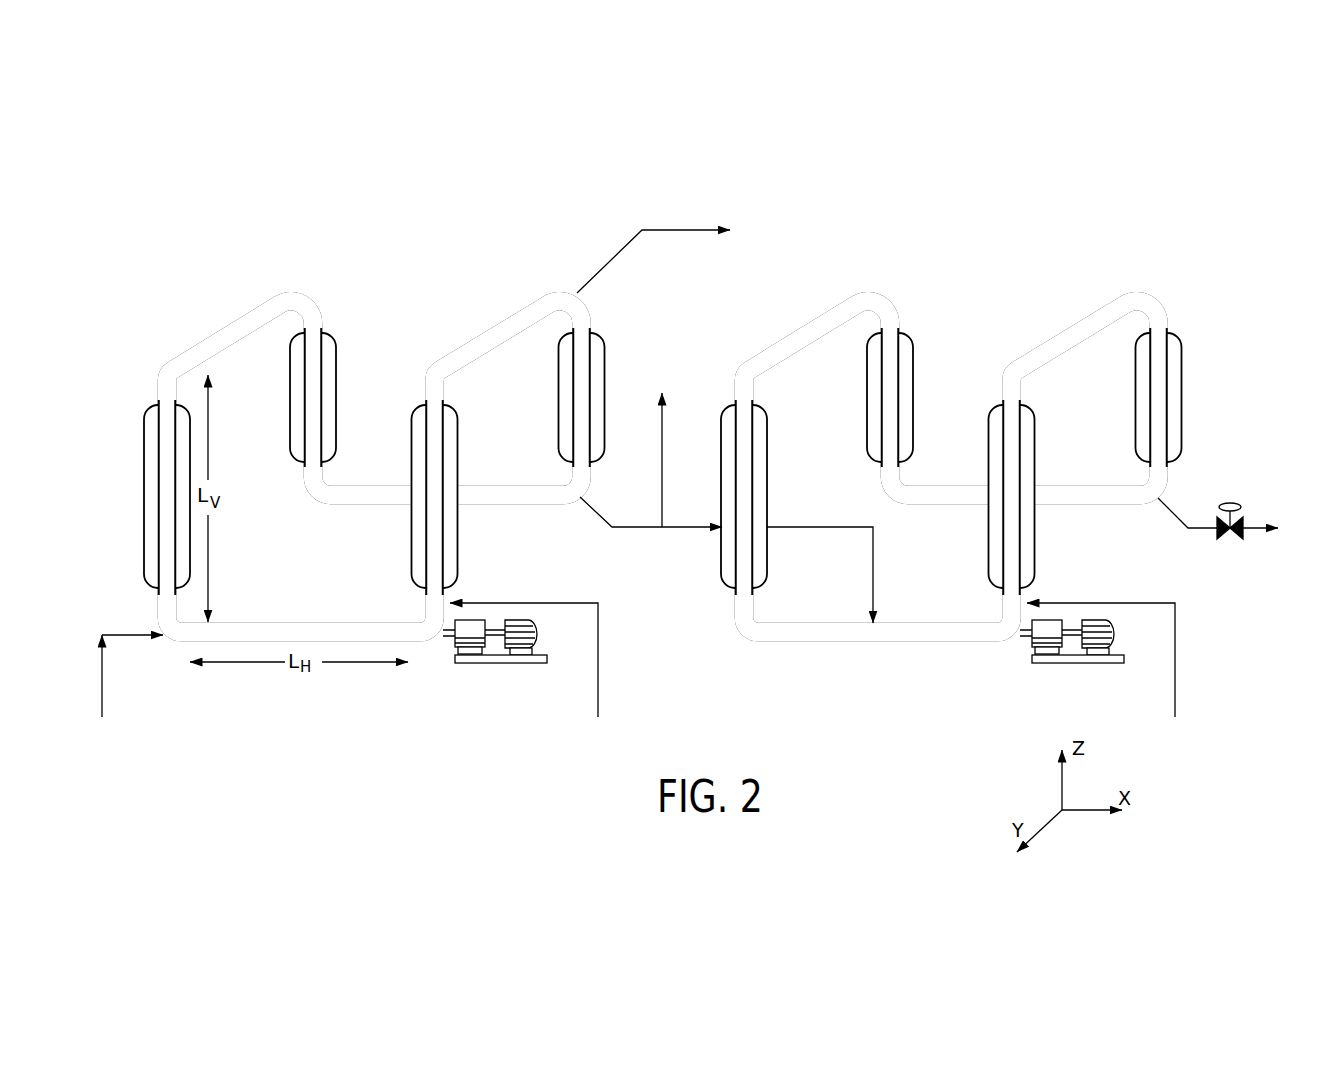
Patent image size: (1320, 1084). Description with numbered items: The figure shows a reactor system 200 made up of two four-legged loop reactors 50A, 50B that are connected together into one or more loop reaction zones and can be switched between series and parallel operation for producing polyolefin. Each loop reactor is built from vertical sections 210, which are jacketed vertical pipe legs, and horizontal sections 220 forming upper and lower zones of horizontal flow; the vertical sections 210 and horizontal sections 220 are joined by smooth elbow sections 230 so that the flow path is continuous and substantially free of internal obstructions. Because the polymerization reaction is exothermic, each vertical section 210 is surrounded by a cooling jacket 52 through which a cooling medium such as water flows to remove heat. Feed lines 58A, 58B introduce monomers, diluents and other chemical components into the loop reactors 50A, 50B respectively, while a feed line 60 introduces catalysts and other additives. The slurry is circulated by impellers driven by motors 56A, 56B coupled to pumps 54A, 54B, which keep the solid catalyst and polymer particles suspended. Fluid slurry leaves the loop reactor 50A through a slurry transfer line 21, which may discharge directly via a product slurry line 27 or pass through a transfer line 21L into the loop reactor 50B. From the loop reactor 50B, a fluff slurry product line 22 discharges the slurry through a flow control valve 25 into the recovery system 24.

The reactor system 200 is at (975, 173).
The product slurry line 27 is at (683, 230).
The elbow section 230 is at (162, 368).
The horizontal section 220 is at (225, 323).
The vertical section 210 is at (317, 387).
The cooling jacket 52 is at (291, 393).
The loop reactor 50A is at (492, 323).
The loop reactor 50B is at (1070, 323).
The flow control valve 25 is at (1230, 502).
The recovery system 24 is at (1278, 530).
The slurry transfer line 21 is at (595, 515).
The transfer line 21L is at (813, 528).
The fluff slurry product line 22 is at (1175, 515).
The feed line 60 is at (103, 677).
The pump 54A is at (455, 647).
The motor 56A is at (538, 640).
The feed line 58A is at (600, 667).
The pump 54B is at (1032, 647).
The motor 56B is at (1115, 640).
The feed line 58B is at (1177, 667).